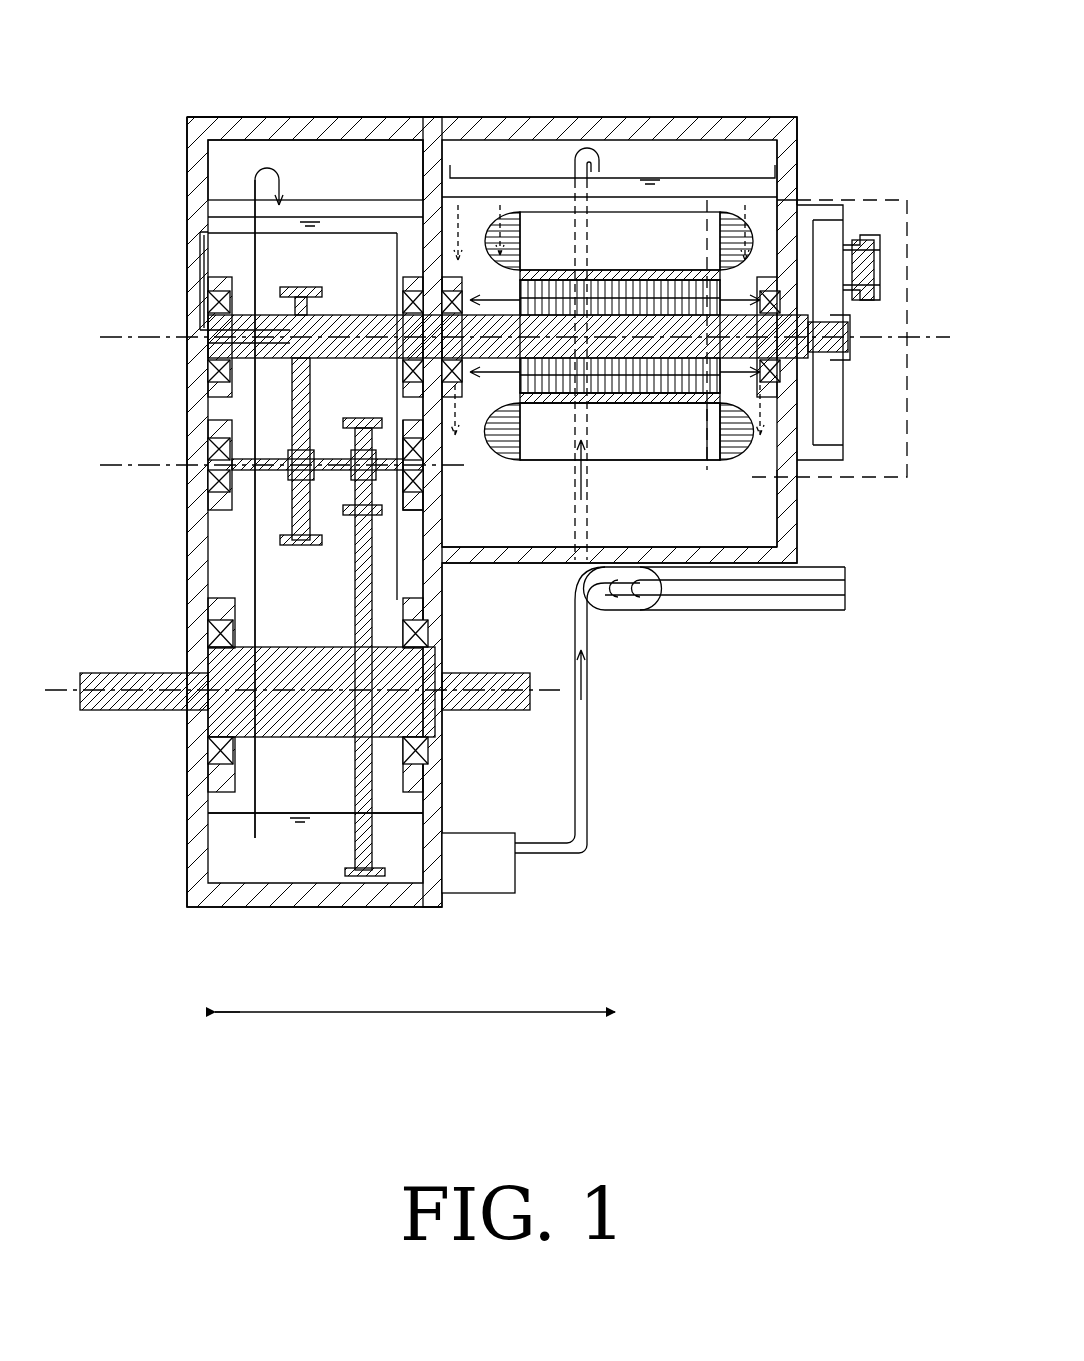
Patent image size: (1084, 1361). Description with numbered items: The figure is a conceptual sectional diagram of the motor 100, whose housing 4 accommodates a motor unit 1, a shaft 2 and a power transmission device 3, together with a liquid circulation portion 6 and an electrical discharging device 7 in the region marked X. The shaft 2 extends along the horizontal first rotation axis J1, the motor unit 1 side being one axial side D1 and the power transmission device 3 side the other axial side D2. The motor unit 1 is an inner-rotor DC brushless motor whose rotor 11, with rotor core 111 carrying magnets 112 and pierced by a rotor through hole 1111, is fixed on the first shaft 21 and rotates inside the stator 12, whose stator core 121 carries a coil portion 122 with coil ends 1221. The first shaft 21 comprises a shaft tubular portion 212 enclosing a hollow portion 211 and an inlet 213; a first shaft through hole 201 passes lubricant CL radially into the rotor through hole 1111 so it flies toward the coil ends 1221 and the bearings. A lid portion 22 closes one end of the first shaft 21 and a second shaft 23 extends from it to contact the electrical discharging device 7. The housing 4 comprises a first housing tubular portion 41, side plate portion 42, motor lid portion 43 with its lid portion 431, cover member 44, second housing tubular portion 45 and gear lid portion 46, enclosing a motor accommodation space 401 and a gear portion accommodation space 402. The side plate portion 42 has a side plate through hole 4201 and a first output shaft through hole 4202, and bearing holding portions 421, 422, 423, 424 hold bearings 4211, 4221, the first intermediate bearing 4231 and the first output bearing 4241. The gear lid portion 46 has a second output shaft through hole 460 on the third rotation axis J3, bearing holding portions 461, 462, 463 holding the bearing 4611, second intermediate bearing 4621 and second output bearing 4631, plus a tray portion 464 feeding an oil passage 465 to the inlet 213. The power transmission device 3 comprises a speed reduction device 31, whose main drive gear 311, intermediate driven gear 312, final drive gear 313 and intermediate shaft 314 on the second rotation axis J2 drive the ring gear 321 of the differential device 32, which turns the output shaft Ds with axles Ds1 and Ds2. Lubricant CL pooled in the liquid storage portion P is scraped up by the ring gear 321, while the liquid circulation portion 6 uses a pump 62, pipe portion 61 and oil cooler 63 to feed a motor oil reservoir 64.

The motor 100 is at (805, 82).
The motor unit 1 is at (625, 288).
The rotor 11 is at (618, 335).
The rotor core 111 is at (608, 285).
The rotor through hole 1111 is at (690, 240).
The magnet 112 is at (540, 282).
The stator 12 is at (643, 368).
The stator core 121 is at (610, 458).
The coil portion 122 is at (672, 460).
The coil end 1221 is at (725, 468).
The shaft 2 is at (539, 336).
The first shaft 21 is at (546, 374).
The hollow portion 211 is at (356, 330).
The shaft tubular portion 212 is at (547, 398).
The inlet 213 is at (210, 340).
The first shaft through hole 201 is at (650, 395).
The lid portion 22 is at (808, 380).
The second shaft 23 is at (852, 343).
The power transmission device 3 is at (269, 594).
The speed reduction device 31 is at (301, 407).
The main drive gear 311 is at (292, 288).
The intermediate driven gear 312 is at (298, 548).
The final drive gear 313 is at (358, 420).
The intermediate shaft 314 is at (350, 514).
The differential device 32 is at (341, 669).
The ring gear 321 is at (362, 878).
The housing 4 is at (806, 140).
The first housing tubular portion 41 is at (686, 122).
The motor accommodation space 401 is at (795, 520).
The gear portion accommodation space 402 is at (320, 175).
The side plate portion 42 is at (425, 165).
The bearing holding portion 421 is at (455, 400).
The bearing holding portion 422 is at (412, 288).
The bearing 4221 is at (410, 290).
The bearing 4211 is at (478, 235).
The bearing holding portion 423 is at (425, 498).
The first intermediate bearing 4231 is at (428, 470).
The side plate through hole 4201 is at (412, 385).
The first output shaft through hole 4202 is at (430, 750).
The bearing holding portion 424 is at (428, 612).
The first output bearing 4241 is at (430, 634).
The motor lid portion 43 is at (790, 492).
The lid portion 431 is at (790, 196).
The cover member 44 is at (870, 280).
The second housing tubular portion 45 is at (270, 118).
The gear lid portion 46 is at (200, 170).
The bearing holding portion 461 is at (222, 392).
The bearing 4611 is at (220, 368).
The bearing holding portion 462 is at (222, 498).
The second intermediate bearing 4621 is at (222, 478).
The bearing holding portion 463 is at (210, 590).
The second output bearing 4631 is at (214, 634).
The tray portion 464 is at (238, 225).
The oil passage 465 is at (200, 268).
The second output shaft through hole 460 is at (215, 668).
The liquid circulation portion 6 is at (680, 459).
The pipe portion 61 is at (573, 526).
The pump 62 is at (472, 893).
The oil cooler 63 is at (645, 605).
The motor oil reservoir 64 is at (582, 148).
The electrical discharging device 7 is at (872, 300).
The region X is at (895, 198).
The first rotation axis J1 is at (102, 333).
The second rotation axis J2 is at (112, 463).
The third rotation axis J3 is at (80, 686).
The liquid storage portion P is at (332, 812).
The lubricant CL is at (252, 880).
The output shaft Ds is at (318, 724).
The axle Ds1 is at (478, 708).
The axle Ds2 is at (122, 712).
The one axial side D1 is at (441, 1014).
The other axial side D2 is at (205, 1014).